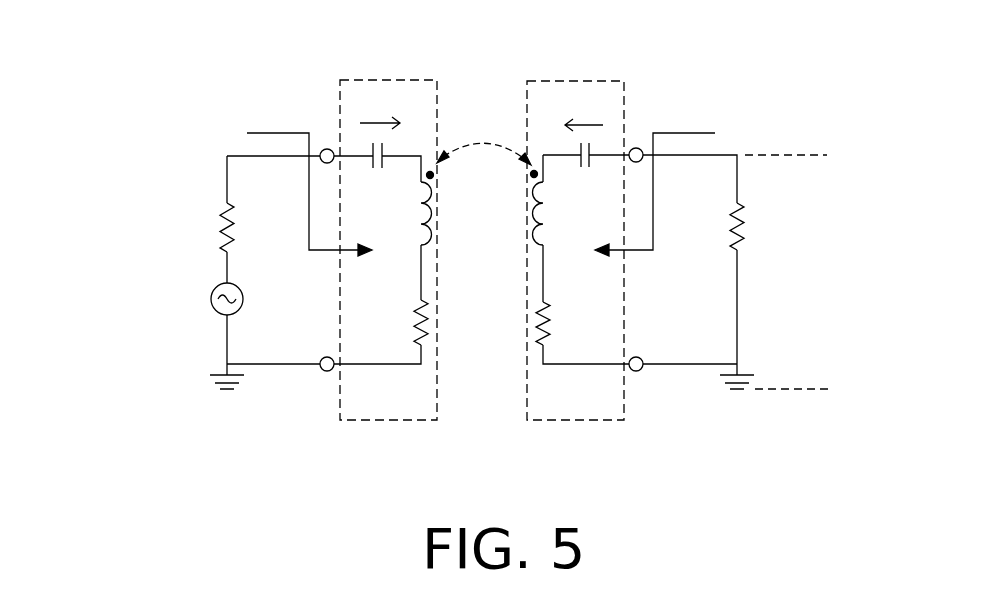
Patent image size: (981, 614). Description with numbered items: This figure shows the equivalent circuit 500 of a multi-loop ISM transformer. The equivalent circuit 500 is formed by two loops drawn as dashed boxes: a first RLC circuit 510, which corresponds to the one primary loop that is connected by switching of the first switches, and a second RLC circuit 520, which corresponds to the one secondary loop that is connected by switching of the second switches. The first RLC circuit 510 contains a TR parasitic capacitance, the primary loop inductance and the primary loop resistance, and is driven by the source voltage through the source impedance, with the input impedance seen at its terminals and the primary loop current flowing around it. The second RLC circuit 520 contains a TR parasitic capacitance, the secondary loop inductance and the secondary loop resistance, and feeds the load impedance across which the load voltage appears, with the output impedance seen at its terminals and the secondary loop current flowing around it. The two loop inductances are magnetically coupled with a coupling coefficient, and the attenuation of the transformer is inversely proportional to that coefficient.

The equivalent circuit 500 is at (506, 236).
The first RLC circuit 510 is at (393, 420).
The second RLC circuit 520 is at (575, 420).